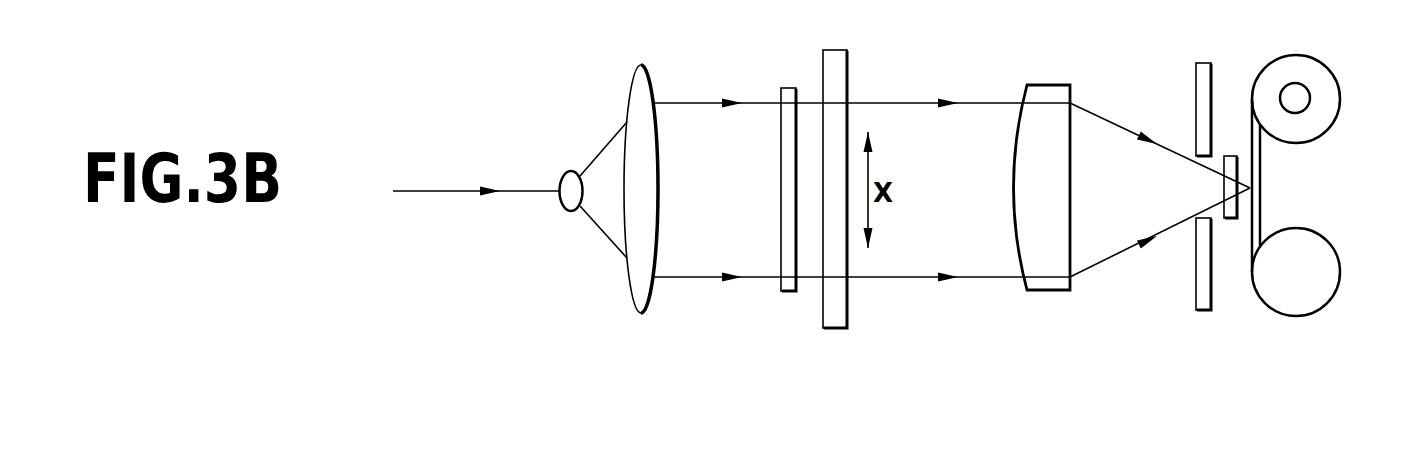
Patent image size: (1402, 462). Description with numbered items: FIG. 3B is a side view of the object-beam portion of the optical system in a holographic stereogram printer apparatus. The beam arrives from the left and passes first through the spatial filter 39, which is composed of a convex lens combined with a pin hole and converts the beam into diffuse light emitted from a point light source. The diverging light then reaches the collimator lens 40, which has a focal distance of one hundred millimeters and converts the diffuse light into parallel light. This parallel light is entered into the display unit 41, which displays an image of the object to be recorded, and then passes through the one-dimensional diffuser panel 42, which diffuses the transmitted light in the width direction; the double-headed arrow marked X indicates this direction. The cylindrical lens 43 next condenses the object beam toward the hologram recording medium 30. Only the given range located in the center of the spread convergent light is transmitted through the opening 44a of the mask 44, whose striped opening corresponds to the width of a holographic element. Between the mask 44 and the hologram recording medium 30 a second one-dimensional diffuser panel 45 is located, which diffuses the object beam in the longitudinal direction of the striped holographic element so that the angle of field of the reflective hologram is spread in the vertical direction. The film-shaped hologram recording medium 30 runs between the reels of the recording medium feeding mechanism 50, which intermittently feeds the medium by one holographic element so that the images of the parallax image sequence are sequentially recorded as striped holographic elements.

The hologram recording medium 30 is at (1257, 207).
The spatial filter 39 is at (568, 183).
The collimator lens 40 is at (645, 82).
The display unit 41 is at (788, 92).
The one-dimensional diffuser panel 42 is at (835, 75).
The cylindrical lens 43 is at (1052, 83).
The mask 44 is at (1200, 80).
The opening 44a is at (1203, 215).
The one-dimensional diffuser panel 45 is at (1228, 218).
The recording medium feeding mechanism 50 is at (1322, 93).